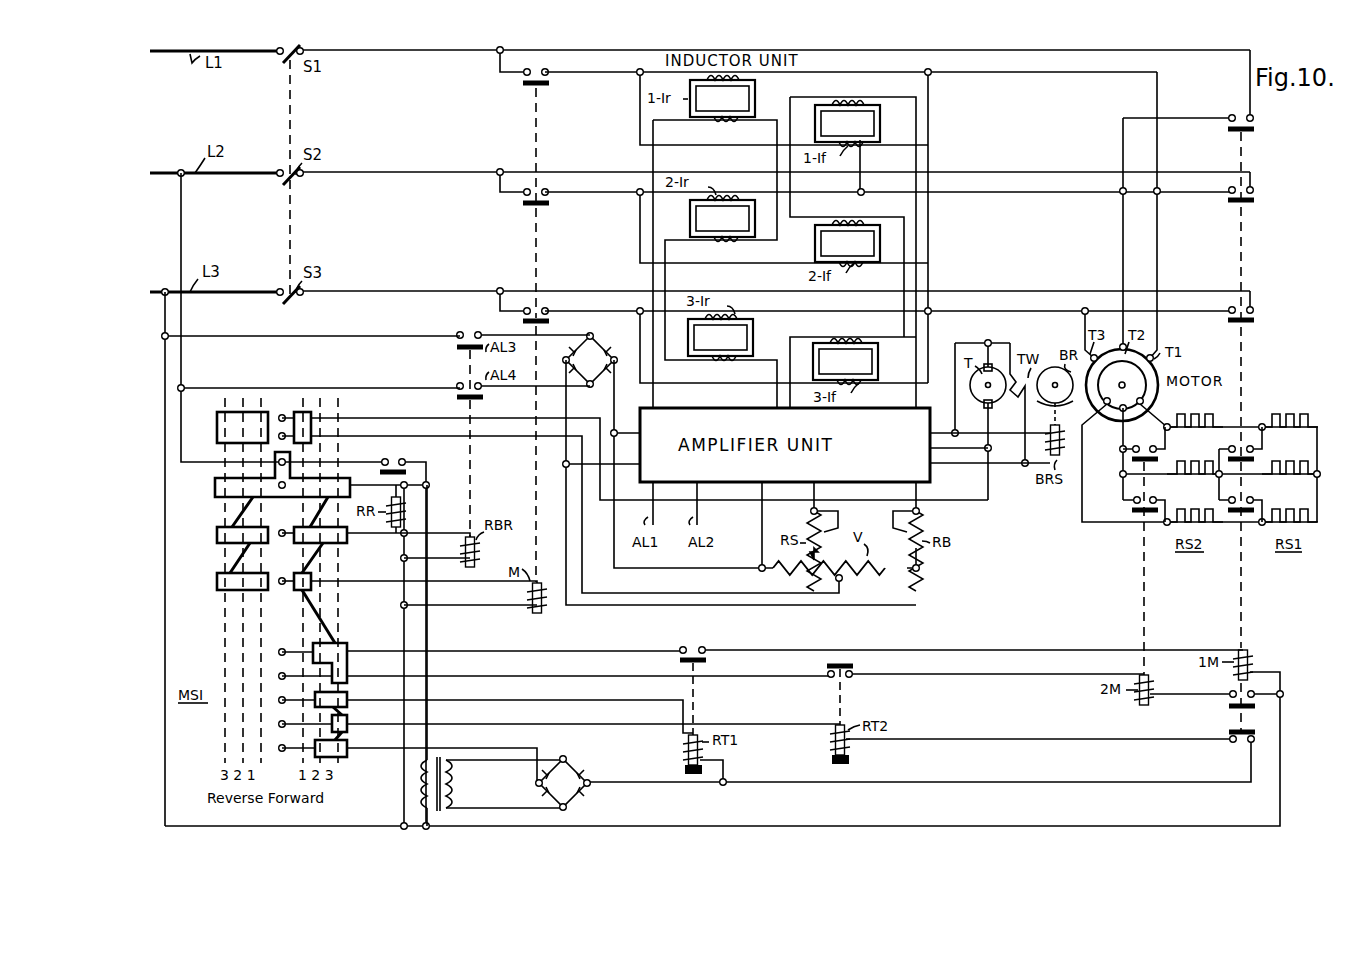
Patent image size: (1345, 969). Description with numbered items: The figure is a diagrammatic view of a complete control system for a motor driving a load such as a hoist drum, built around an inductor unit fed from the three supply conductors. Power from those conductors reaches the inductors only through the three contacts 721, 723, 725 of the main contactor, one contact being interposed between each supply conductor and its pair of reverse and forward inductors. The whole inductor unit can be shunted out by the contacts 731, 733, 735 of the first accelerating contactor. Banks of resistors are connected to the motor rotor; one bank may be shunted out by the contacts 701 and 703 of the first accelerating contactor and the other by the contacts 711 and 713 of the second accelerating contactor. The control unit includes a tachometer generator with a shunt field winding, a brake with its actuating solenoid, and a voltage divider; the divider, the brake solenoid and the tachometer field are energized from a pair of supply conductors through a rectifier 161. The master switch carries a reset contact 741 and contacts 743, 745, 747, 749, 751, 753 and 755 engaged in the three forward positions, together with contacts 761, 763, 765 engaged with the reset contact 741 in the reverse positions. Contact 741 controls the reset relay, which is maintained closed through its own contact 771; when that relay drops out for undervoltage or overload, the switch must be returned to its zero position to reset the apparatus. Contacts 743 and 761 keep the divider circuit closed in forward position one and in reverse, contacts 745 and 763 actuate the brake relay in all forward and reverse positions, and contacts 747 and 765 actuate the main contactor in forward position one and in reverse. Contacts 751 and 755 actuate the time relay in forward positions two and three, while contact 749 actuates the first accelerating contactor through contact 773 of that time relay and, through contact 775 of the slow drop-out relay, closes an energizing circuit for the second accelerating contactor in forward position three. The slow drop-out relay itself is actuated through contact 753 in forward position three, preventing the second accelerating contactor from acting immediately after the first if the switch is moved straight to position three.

The contact 721 is at (548, 86).
The contact 723 is at (548, 206).
The contact 725 is at (548, 316).
The contact 731 is at (1254, 130).
The contact 733 is at (1254, 197).
The contact 735 is at (1254, 312).
The contact 761 is at (219, 412).
The contact 763 is at (213, 535).
The contact 765 is at (213, 581).
The reset contact 741 is at (346, 472).
The contact 743 is at (311, 416).
The contact 745 is at (330, 543).
The contact 747 is at (311, 585).
The contact 749 is at (347, 660).
The contact 751 is at (347, 695).
The contact 753 is at (347, 718).
The contact 755 is at (347, 743).
The contact 771 is at (396, 447).
The contact 773 is at (705, 655).
The contact 775 is at (848, 678).
The contact 711 is at (1160, 456).
The contact 713 is at (1158, 496).
The contact 701 is at (1256, 456).
The contact 703 is at (1254, 496).
The rectifier 161 is at (601, 368).